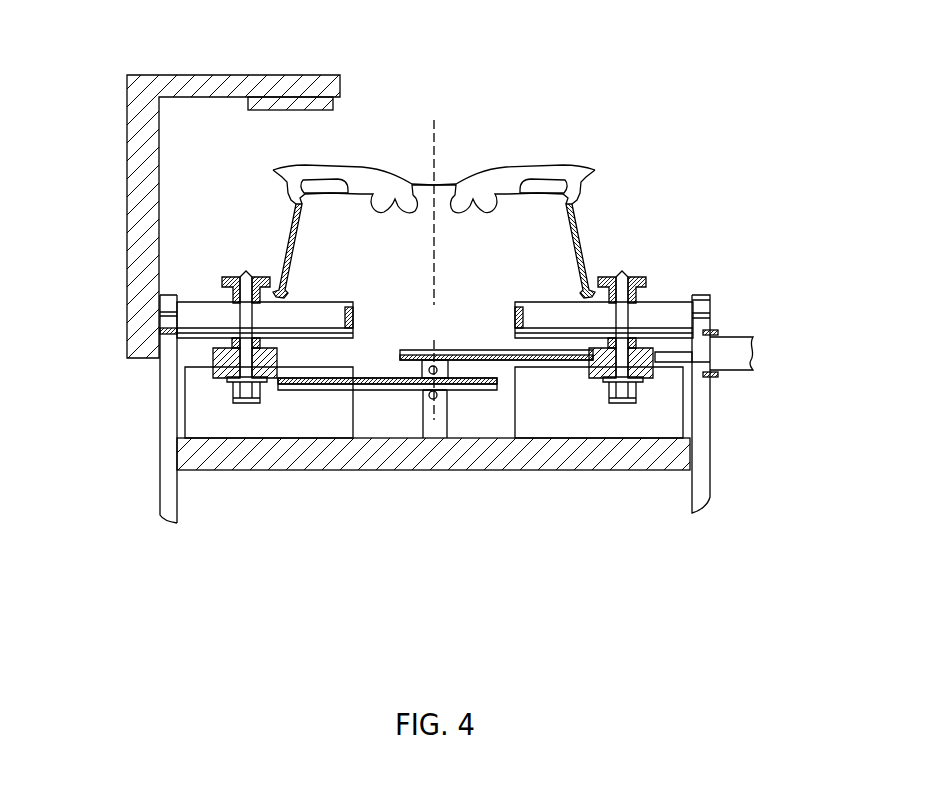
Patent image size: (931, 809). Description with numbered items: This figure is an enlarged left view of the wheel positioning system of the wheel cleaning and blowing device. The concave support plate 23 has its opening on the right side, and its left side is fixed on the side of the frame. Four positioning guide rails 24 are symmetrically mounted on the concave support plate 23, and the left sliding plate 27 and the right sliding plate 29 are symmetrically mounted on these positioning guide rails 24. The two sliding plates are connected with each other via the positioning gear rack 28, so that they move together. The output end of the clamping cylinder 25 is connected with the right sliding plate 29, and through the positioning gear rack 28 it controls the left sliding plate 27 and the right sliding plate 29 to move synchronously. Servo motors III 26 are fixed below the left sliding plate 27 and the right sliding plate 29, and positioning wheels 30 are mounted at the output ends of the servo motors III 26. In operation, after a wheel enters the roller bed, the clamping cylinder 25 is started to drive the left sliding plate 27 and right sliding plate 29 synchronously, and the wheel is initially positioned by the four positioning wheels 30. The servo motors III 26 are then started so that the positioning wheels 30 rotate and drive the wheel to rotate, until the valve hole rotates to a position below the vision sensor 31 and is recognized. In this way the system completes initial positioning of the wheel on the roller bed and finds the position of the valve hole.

The concave support plate 23 is at (673, 455).
The positioning guide rail 24 is at (672, 415).
The clamping cylinder 25 is at (753, 345).
The servo motor III 26 is at (245, 390).
The left sliding plate 27 is at (222, 357).
The positioning gear rack 28 is at (400, 355).
The right sliding plate 29 is at (703, 335).
The positioning wheel 30 is at (632, 288).
The vision sensor 31 is at (333, 110).